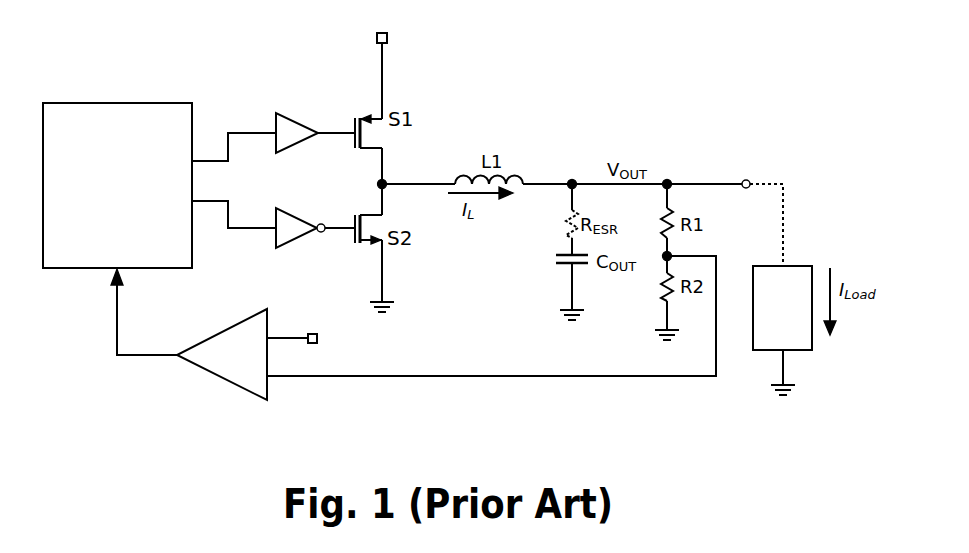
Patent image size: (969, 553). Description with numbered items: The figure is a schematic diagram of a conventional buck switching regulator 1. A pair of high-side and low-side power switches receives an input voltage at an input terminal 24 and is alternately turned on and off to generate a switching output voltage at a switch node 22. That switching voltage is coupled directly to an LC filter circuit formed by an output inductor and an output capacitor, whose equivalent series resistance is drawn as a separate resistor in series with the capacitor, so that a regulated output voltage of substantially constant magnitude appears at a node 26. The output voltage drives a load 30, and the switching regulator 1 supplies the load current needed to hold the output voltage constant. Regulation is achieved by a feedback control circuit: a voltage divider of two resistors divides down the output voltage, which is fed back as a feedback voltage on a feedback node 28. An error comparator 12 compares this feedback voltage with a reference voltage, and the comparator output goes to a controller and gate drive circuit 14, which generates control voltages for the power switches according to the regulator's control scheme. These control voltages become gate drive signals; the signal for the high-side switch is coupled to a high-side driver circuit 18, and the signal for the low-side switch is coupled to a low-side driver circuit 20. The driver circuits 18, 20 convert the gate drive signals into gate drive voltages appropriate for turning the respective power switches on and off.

The switching regulator 1 is at (635, 77).
The error comparator 12 is at (226, 383).
The controller and gate drive circuit 14 is at (117, 185).
The high-side driver circuit 18 is at (296, 118).
The low-side driver circuit 20 is at (295, 215).
The switch node 22 is at (385, 182).
The input voltage terminal 24 is at (387, 38).
The node 26 is at (572, 180).
The feedback node 28 is at (445, 377).
The load 30 is at (798, 263).